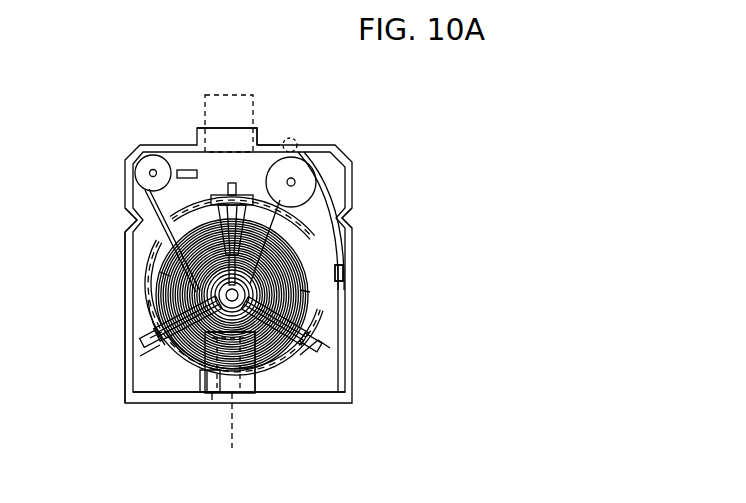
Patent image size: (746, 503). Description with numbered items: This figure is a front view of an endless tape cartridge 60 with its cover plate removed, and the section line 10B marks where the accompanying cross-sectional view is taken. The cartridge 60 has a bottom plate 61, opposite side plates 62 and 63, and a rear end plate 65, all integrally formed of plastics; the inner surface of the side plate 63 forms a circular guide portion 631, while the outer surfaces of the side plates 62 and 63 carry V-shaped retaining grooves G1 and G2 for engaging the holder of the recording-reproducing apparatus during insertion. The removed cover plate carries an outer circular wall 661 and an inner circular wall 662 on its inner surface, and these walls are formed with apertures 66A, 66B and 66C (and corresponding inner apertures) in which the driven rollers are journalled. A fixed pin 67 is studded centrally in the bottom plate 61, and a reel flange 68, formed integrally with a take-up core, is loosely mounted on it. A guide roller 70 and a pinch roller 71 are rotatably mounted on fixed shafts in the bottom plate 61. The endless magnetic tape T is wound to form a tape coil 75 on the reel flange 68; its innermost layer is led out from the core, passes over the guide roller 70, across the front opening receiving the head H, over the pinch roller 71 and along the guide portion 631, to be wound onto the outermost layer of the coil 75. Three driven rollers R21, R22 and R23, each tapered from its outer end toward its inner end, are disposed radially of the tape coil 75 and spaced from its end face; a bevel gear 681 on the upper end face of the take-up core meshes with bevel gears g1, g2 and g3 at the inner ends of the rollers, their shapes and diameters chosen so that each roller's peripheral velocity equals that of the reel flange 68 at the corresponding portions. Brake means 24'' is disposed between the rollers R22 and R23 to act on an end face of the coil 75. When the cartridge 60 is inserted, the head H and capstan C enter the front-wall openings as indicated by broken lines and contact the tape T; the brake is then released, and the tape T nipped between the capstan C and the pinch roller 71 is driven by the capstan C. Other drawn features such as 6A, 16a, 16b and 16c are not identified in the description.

The section line 10B- 10B is at (232, 84).
The endless tape cartridge 60 is at (346, 139).
The bottom plate 61 is at (347, 398).
The side plate 62 is at (135, 338).
The side plate 63 is at (352, 345).
The circular guide portion 631 is at (340, 235).
The inner circular wall 662 is at (343, 272).
The rear end plate 65 is at (250, 430).
The outer circular wall 661 is at (180, 392).
The aperture 66A is at (222, 195).
The aperture 66B is at (312, 337).
The aperture 66C is at (160, 355).
The fixed pin 67 is at (160, 300).
The reel flange 68 is at (285, 375).
The bevel gear 681 is at (255, 385).
The guide roller 70 is at (140, 170).
The pinch roller 71 is at (300, 182).
The tape coil 75 is at (150, 325).
The driven roller R21 is at (170, 250).
The driven roller R22 is at (145, 340).
The driven roller R23 is at (322, 355).
The bevel gear g1 is at (158, 276).
The bevel gear g2 is at (210, 393).
The bevel gear g3 is at (310, 292).
The V-shaped retaining groove G1 is at (124, 221).
The V-shaped retaining groove G2 is at (346, 218).
The magnetic tape T is at (148, 200).
The head H is at (246, 98).
The capstan C is at (294, 139).
The top wall portion 6A is at (262, 144).
The block 16a is at (227, 140).
The block 16b is at (346, 388).
The block 16c is at (180, 380).
The brake means 24'' is at (230, 388).